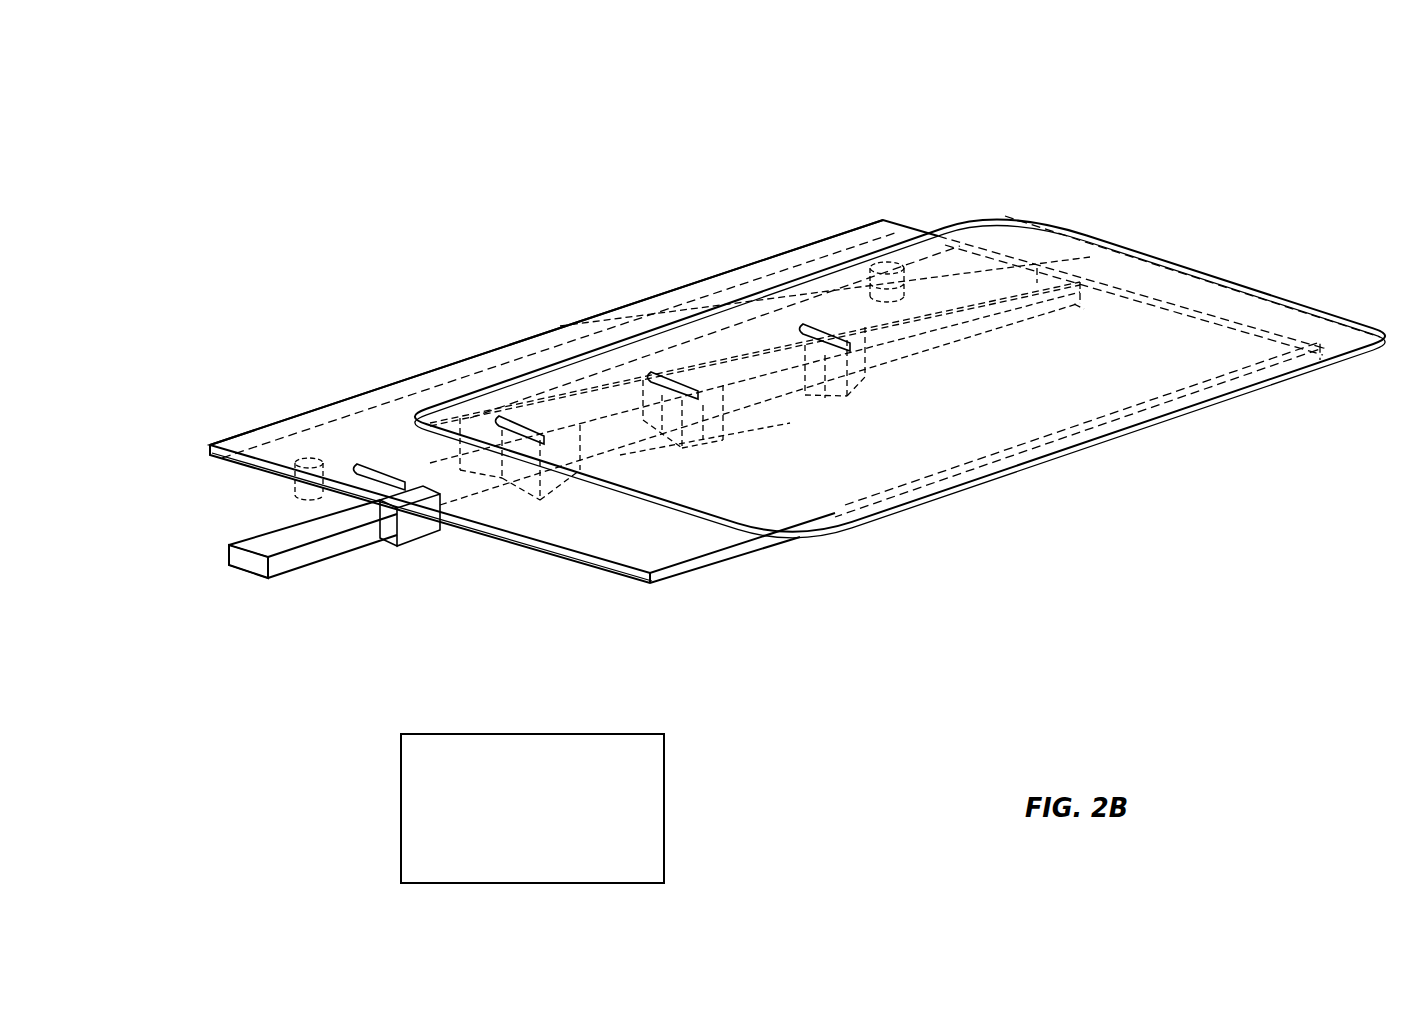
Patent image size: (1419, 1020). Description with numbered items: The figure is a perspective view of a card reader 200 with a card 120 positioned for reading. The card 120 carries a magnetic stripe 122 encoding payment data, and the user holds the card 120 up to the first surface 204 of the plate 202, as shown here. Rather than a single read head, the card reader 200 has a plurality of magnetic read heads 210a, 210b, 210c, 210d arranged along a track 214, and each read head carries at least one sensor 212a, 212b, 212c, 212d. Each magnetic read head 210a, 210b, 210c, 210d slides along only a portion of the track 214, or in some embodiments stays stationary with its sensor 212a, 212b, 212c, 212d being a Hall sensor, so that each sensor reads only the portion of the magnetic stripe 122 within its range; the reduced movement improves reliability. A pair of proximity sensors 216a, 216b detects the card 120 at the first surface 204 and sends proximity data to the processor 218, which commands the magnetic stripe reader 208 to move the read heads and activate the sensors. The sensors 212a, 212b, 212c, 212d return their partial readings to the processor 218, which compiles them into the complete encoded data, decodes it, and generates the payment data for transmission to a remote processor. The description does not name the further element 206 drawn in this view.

The card 120 is at (1205, 414).
The magnetic stripe 122 is at (1073, 253).
The card reader 200 is at (366, 256).
The plate 202 is at (700, 282).
The first surface 204 is at (862, 242).
The substrate plate 206 is at (730, 553).
The magnetic stripe reader 208 is at (308, 568).
The magnetic read head 210a is at (430, 536).
The magnetic read head 210b is at (556, 491).
The magnetic read head 210c is at (710, 443).
The magnetic read head 210d is at (852, 396).
The sensor 212a is at (362, 468).
The sensor 212b is at (506, 420).
The sensor 212c is at (656, 376).
The sensor 212d is at (807, 330).
The track 214 is at (246, 578).
The proximity sensor 216a is at (308, 488).
The proximity sensor 216b is at (886, 262).
The processor 218 is at (494, 708).